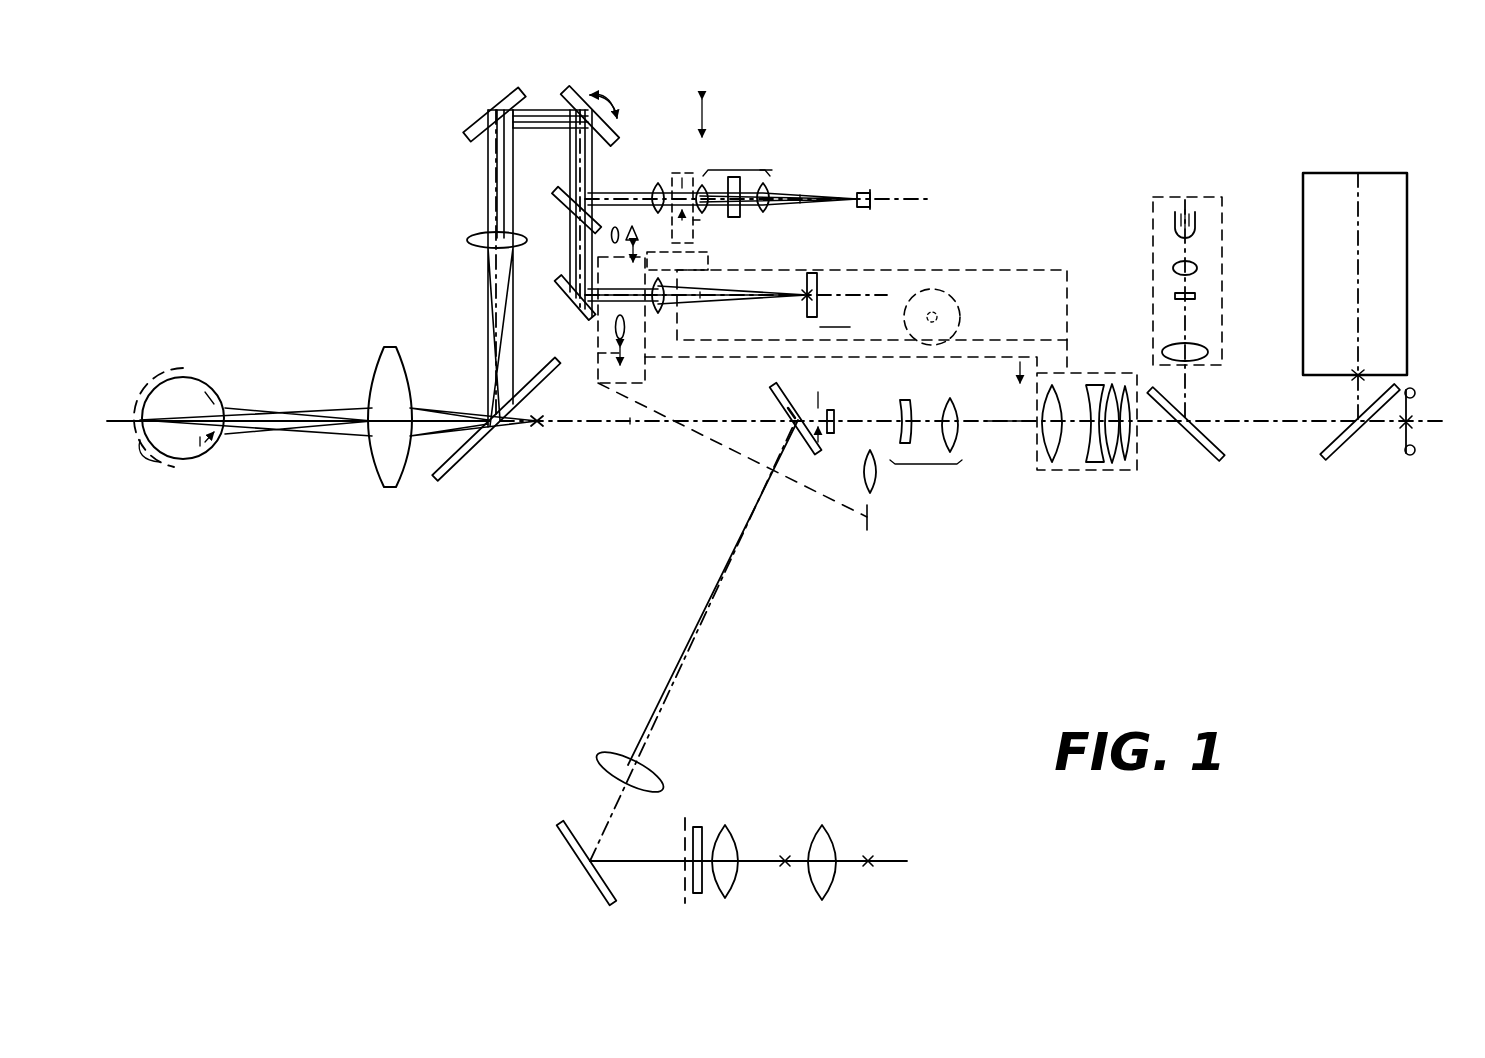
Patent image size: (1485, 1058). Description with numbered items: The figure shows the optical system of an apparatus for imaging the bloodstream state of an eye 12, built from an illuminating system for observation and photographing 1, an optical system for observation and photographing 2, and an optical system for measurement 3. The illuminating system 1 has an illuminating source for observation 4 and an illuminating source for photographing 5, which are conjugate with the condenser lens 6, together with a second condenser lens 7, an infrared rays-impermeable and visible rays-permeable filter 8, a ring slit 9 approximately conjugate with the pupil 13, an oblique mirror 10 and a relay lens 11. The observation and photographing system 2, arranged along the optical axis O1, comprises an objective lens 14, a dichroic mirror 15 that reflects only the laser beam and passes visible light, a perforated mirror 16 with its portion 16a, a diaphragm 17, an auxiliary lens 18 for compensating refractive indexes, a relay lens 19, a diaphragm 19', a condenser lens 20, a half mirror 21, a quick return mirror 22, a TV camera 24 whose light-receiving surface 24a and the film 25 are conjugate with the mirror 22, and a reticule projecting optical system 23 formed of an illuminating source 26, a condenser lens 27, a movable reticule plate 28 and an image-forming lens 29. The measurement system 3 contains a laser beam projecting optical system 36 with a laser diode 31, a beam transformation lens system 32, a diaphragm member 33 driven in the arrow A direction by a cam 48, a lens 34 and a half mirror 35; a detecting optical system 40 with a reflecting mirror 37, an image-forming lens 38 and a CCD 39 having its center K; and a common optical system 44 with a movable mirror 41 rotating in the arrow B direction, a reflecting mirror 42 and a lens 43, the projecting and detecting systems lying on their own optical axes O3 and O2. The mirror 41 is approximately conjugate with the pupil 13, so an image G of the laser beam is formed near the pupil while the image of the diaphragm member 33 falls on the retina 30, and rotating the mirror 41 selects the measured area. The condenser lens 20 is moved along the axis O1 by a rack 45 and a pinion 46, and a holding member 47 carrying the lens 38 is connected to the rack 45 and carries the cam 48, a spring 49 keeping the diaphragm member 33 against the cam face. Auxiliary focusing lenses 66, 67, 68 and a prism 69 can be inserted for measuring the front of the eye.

The illuminating system for observation and photographing 1 is at (810, 785).
The optical system for observation and photographing 2 is at (1020, 462).
The optical system for measurement 3 is at (842, 100).
The illuminating source for observation 4 is at (869, 856).
The illuminating source for photographing 5 is at (786, 866).
The condenser lens 6 is at (830, 826).
The condenser lens 7 is at (740, 840).
The infrared rays-impermeable and visible rays-permeable filter 8 is at (700, 825).
The ring slit 9 is at (685, 830).
The oblique mirror 10 is at (572, 858).
The relay lens 11 is at (605, 752).
The eye 12 is at (205, 372).
The pupil 13 is at (216, 434).
The objective lens 14 is at (378, 462).
The dichroic mirror 15 is at (449, 470).
The perforated mirror 16 is at (812, 452).
The mirror aperture 16a is at (784, 412).
The diaphragm 17 is at (828, 406).
The auxiliary lens for compensating refractive indexes 18 is at (834, 434).
The relay lens 19 is at (926, 452).
The diaphragm 19' is at (1010, 478).
The condenser lens 20 is at (1065, 478).
The half mirror 21 is at (1212, 460).
The quick return mirror 22 is at (1340, 460).
The reticule projecting optical system 23 is at (1130, 190).
The TV camera 24 is at (1358, 172).
The light-receiving surface 24a is at (1320, 378).
The film 25 is at (1395, 448).
The illuminating source 26 is at (1200, 226).
The condenser lens 27 is at (1197, 268).
The reticule plate 28 is at (1195, 297).
The image-forming lens 29 is at (1208, 351).
The retina 30 is at (165, 462).
The laser diode 31 is at (857, 192).
The lens system for transforming a laser beam 32 is at (733, 177).
The diaphragm member 33 is at (695, 221).
The lens 34 is at (657, 178).
The half mirror 35 is at (533, 141).
The laser beam projecting optical system 36 is at (763, 158).
The reflecting mirror 37 is at (577, 317).
The image-forming lens 38 is at (662, 306).
The CCD 39 is at (820, 279).
The detecting optical system 40 is at (804, 262).
The movable mirror 41 is at (568, 98).
The reflecting mirror 42 is at (494, 108).
The lens 43 is at (467, 240).
The common optical system 44 is at (455, 165).
The rack 45 is at (995, 338).
The pinion 46 is at (958, 310).
The holding member 47 is at (648, 360).
The cam 48 is at (700, 252).
The spring 49 is at (682, 167).
The auxiliary lens for focusing 66 is at (878, 485).
The auxiliary lens for focusing 67 is at (614, 335).
The auxiliary lens for focusing 68 is at (615, 227).
The prism 69 is at (630, 248).
The arrow A direction A is at (716, 118).
The arrow B direction B is at (613, 95).
The image of the laser beam G is at (200, 446).
The center of CCD K is at (806, 300).
The optical axis for observation and photographing O1 is at (634, 426).
The optical axis O2 is at (703, 297).
The optical axis O3 is at (803, 197).